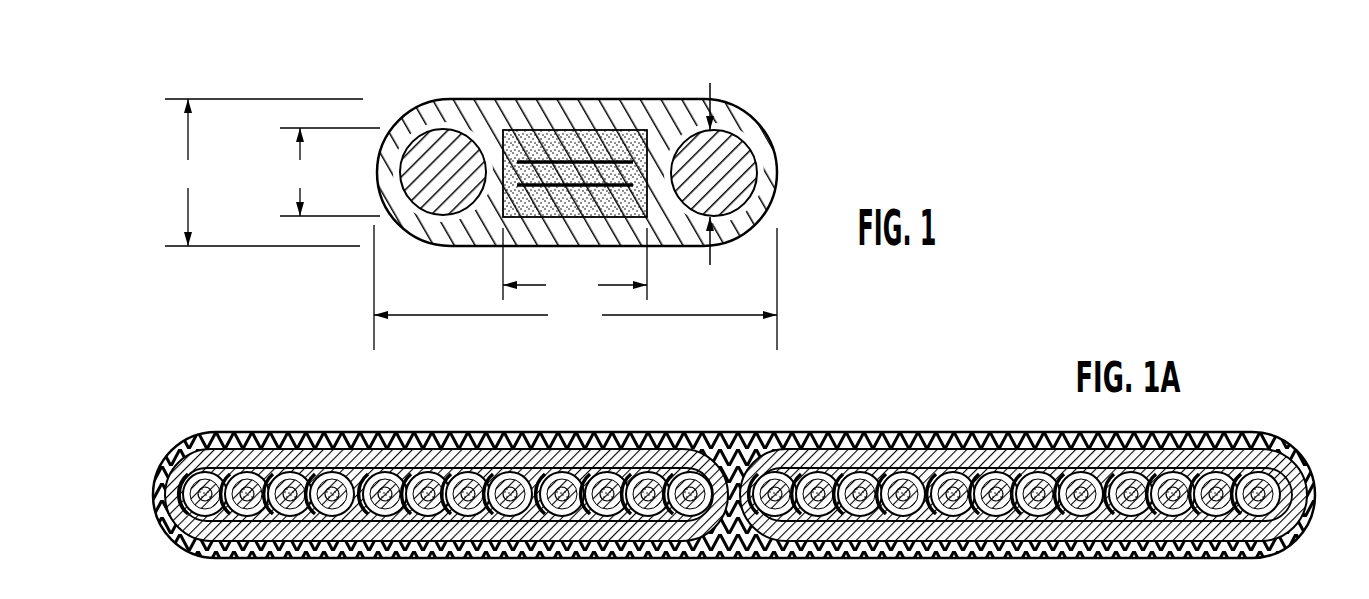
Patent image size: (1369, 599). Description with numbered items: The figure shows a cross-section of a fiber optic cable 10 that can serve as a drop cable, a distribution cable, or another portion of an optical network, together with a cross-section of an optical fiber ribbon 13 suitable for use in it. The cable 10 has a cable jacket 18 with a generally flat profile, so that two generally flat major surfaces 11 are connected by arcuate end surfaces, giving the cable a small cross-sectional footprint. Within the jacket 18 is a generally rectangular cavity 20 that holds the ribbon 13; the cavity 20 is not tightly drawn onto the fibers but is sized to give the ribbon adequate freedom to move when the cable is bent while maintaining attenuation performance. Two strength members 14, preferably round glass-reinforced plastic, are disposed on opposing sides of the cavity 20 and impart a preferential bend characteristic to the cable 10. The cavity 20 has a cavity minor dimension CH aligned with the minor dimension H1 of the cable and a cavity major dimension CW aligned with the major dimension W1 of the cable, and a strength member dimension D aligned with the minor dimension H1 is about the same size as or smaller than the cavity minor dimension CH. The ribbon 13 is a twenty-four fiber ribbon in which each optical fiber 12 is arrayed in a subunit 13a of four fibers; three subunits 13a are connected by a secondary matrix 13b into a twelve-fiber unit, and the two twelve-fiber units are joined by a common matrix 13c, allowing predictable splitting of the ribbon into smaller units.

In FIG. 1, the fiber optic cable 10 is at (338, 64).
In FIG. 1, the major surfaces 11 is at (660, 100).
In FIG. 1A, the optical fiber 12 is at (297, 445).
In FIG. 1, the optical fiber ribbon 13 is at (585, 157).
In FIG. 1A, the optical fiber ribbon 13 is at (230, 432).
In FIG. 1A, the subunits 13a is at (310, 558).
In FIG. 1A, the secondary matrix 13b is at (183, 553).
In FIG. 1A, the common matrix 13c is at (158, 477).
In FIG. 1, the strength member 14 is at (440, 133).
In FIG. 1, the cable jacket 18 is at (433, 235).
In FIG. 1, the cavity 20 is at (515, 137).
In FIG. 1, the minor dimension H1 is at (264, 172).
In FIG. 1, the cavity minor dimension CH is at (330, 172).
In FIG. 1, the cavity major dimension CW is at (575, 264).
In FIG. 1, the major dimension W1 is at (575, 287).
In FIG. 1, the strength member dimension D is at (714, 88).